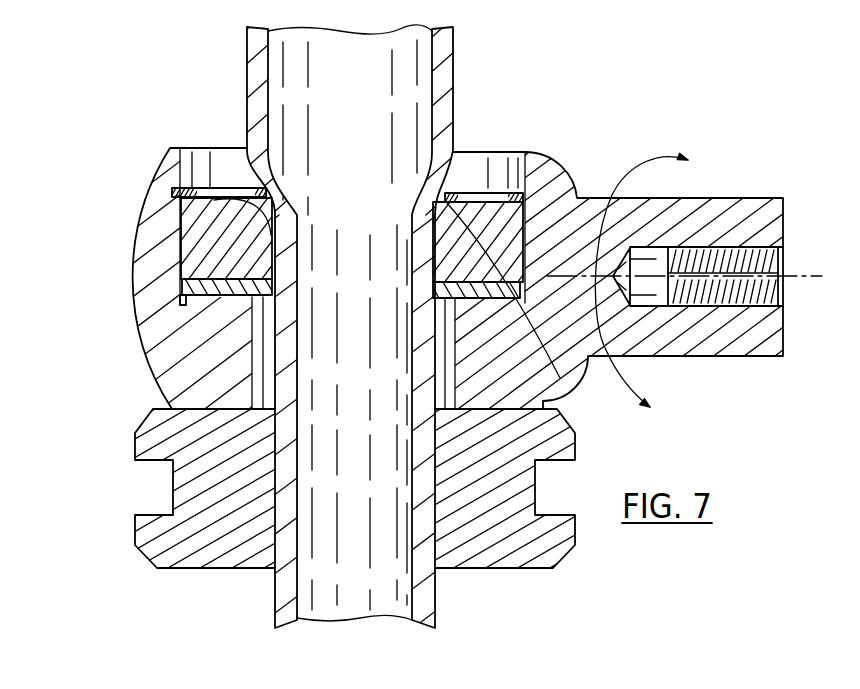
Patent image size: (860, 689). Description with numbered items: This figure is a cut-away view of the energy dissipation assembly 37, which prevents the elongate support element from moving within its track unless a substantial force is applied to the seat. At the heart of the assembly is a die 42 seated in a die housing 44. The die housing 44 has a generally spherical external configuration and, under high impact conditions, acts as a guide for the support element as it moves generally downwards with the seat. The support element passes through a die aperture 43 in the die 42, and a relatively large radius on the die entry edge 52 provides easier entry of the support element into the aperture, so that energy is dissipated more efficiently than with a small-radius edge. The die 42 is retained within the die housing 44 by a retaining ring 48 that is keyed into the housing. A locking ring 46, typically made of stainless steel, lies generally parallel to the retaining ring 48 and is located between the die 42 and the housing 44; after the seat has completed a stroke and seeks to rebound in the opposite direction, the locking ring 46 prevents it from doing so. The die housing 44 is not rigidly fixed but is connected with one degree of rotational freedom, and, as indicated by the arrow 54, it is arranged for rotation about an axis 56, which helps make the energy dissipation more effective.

The energy dissipation assembly 37 is at (95, 403).
The die 42 is at (200, 238).
The die aperture 43 is at (455, 158).
The die housing 44 is at (170, 337).
The locking ring 46 is at (185, 288).
The retaining ring 48 is at (534, 162).
The die entry edge 52 is at (220, 196).
The arrow 54 is at (662, 153).
The axis 56 is at (803, 274).